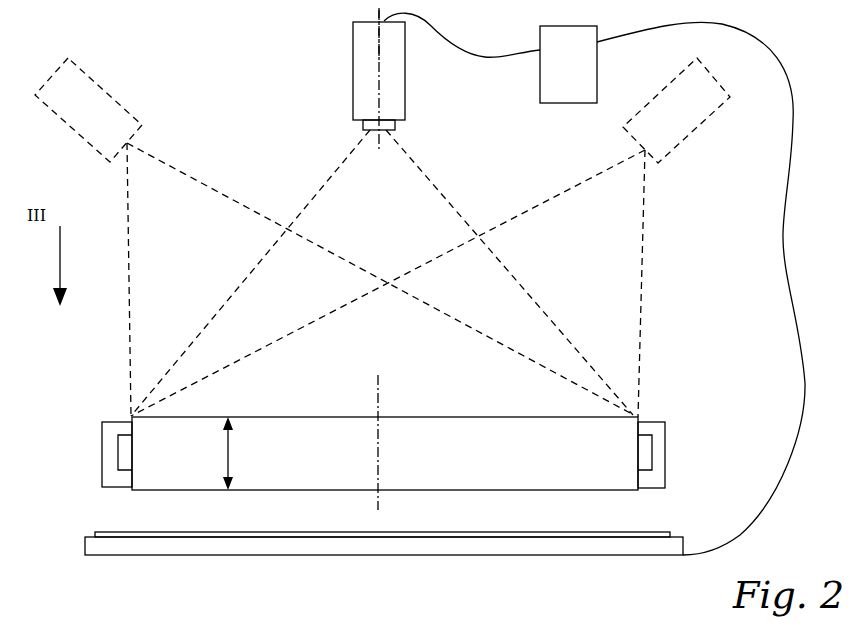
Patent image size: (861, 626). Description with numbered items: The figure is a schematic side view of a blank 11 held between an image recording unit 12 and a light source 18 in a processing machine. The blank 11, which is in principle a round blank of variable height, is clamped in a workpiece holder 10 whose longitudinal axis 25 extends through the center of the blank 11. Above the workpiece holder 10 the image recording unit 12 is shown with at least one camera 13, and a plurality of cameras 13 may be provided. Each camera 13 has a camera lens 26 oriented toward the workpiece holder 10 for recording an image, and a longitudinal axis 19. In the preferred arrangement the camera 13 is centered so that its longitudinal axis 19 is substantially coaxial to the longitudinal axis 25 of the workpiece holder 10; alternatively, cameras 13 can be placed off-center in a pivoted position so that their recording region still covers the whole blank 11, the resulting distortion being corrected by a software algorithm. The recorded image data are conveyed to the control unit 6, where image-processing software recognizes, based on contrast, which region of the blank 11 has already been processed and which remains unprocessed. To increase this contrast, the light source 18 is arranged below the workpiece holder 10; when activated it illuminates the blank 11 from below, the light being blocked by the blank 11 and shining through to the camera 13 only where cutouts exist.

The control unit 6 is at (575, 75).
The workpiece holder 10 is at (665, 458).
The blank 11 is at (613, 415).
The image recording unit 12 is at (233, 64).
The camera 13 is at (100, 120).
The light source 18 is at (103, 533).
The longitudinal axis 19 is at (377, 40).
The longitudinal axis 25 is at (378, 392).
The camera lens 26 is at (365, 130).